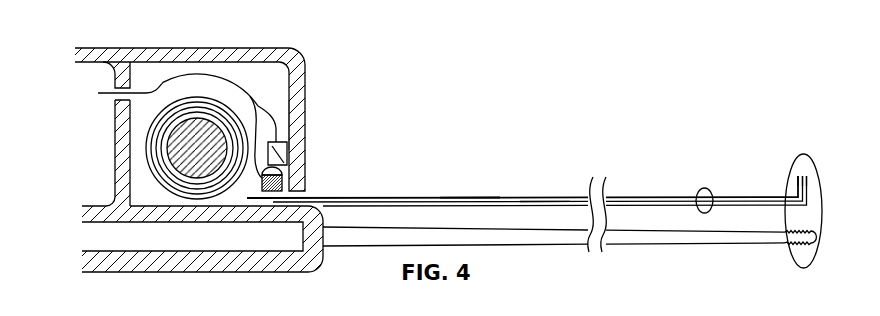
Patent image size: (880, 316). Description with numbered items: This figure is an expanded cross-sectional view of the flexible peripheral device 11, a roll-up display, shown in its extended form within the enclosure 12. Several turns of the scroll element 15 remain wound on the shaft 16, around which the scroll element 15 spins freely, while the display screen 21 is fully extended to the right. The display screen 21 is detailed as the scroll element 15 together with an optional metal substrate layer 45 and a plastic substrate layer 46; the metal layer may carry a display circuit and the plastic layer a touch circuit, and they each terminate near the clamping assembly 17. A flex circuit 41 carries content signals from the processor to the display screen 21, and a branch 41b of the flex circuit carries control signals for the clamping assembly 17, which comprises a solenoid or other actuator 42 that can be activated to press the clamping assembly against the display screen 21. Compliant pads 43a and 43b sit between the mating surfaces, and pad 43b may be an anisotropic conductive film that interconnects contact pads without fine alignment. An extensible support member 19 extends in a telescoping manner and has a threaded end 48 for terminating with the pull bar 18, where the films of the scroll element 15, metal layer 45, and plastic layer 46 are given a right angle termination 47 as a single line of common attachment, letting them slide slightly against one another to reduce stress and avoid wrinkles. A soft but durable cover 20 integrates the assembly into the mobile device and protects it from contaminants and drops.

The flexible peripheral device 11 is at (478, 114).
The enclosure 12 is at (291, 60).
The scroll element 15 is at (187, 100).
The shaft 16 is at (168, 140).
The clamping assembly 17 is at (317, 145).
The pull bar 18 is at (812, 215).
The extensible support member 19 is at (685, 237).
The cover 20 is at (173, 262).
The display screen 21 is at (702, 189).
The flex circuit 41 is at (215, 76).
The branch of the flex circuit 41b is at (268, 115).
The solenoid or other actuator 42 is at (303, 126).
The compliant pad 43a is at (288, 168).
The compliant pad 43b is at (282, 187).
The metal substrate layer 45 is at (545, 197).
The plastic substrate layer 46 is at (472, 197).
The right angle termination 47 is at (798, 181).
The threaded end 48 is at (798, 244).